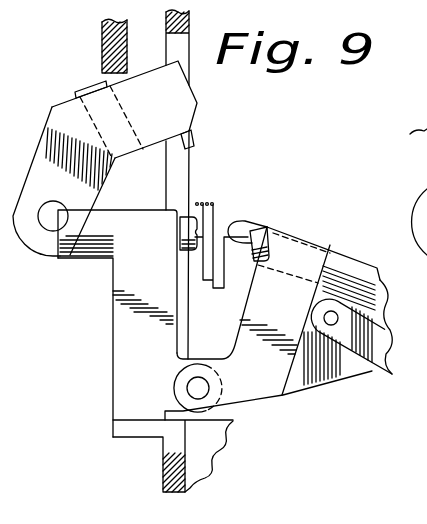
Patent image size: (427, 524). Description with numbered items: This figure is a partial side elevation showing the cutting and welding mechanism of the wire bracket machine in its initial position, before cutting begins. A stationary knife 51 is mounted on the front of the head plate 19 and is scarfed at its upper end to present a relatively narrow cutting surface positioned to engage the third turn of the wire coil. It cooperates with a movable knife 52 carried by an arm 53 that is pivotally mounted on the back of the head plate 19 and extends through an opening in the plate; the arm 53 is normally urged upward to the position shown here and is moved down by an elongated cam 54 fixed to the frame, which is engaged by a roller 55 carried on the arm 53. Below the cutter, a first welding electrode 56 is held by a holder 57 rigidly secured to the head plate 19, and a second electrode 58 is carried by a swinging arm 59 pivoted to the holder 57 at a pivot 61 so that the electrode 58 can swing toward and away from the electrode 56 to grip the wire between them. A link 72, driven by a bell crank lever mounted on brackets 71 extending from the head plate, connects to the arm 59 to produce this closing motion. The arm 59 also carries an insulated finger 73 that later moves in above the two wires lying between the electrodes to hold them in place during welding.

The head plate 19 is at (168, 477).
The stationary knife 51 is at (213, 225).
The movable knife 52 is at (194, 141).
The arm 53 is at (52, 111).
The elongated cam 54 is at (103, 25).
The roller 55 is at (93, 82).
The welding electrode 56 is at (186, 216).
The holder 57 is at (87, 254).
The second electrode 58 is at (271, 225).
The swinging arm 59 is at (284, 365).
The pivot 61 is at (196, 388).
The brackets 71 is at (346, 367).
The link 72 is at (376, 327).
The finger 73 is at (250, 222).